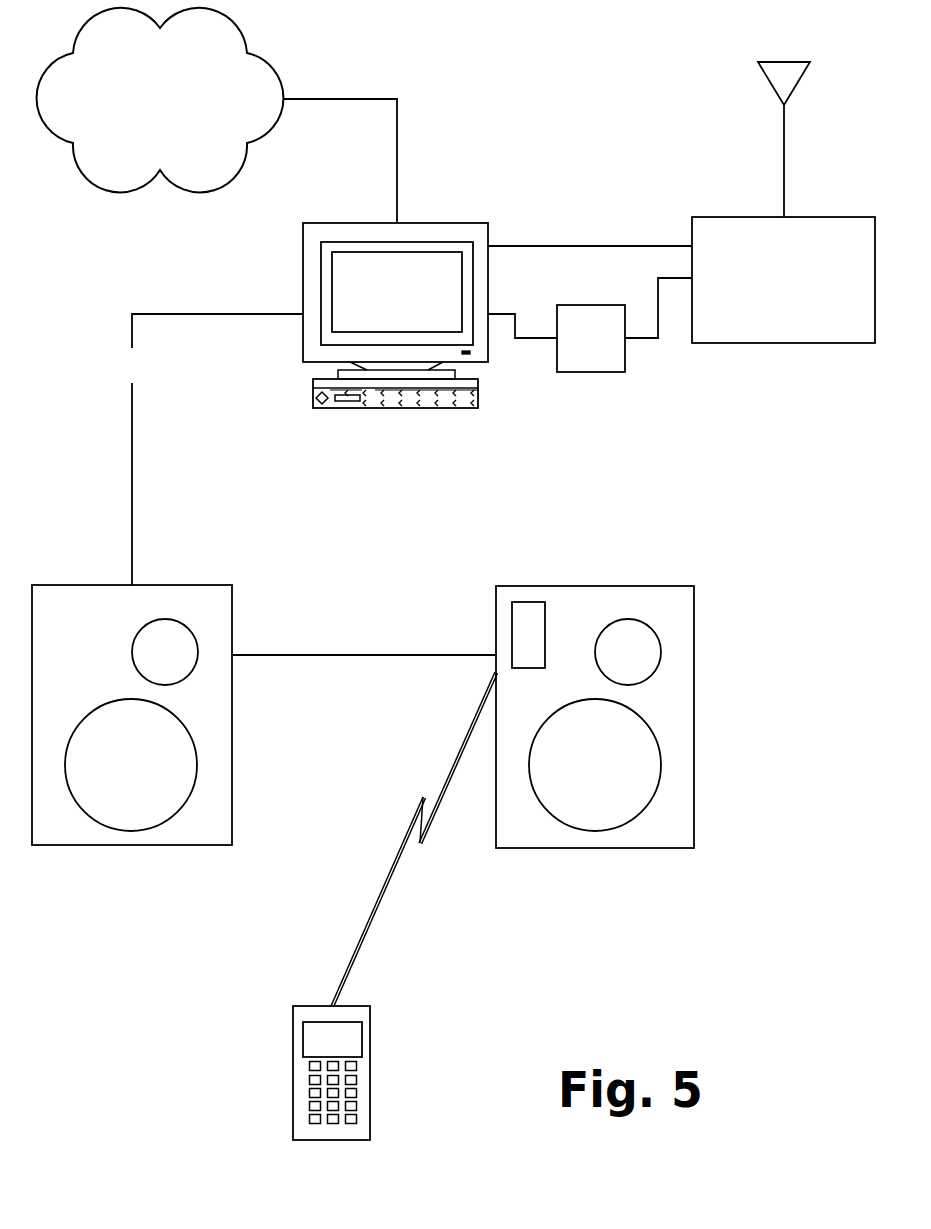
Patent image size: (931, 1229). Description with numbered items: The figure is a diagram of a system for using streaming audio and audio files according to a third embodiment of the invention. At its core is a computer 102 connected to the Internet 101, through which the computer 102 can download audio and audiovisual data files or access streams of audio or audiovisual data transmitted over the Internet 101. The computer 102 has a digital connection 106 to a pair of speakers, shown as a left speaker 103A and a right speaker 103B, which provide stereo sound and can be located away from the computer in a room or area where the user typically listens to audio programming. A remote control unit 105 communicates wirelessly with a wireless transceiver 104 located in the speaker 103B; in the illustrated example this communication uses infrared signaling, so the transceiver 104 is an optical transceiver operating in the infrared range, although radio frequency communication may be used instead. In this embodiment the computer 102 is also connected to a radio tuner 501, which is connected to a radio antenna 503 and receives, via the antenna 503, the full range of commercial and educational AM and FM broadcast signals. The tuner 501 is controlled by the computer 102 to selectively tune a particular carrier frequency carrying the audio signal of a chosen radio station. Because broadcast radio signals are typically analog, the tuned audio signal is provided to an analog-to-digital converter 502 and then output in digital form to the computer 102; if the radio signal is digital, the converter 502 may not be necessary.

The Internet 101 is at (160, 100).
The computer 102 is at (395, 330).
The left speaker 103A is at (214, 603).
The right speaker 103B is at (662, 602).
The wireless transceiver 104 is at (529, 618).
The remote control unit 105 is at (312, 1014).
The digital connection 106 is at (208, 449).
The radio tuner 501 is at (783, 280).
The analog-to-digital converter 502 is at (591, 339).
The radio antenna 503 is at (782, 77).